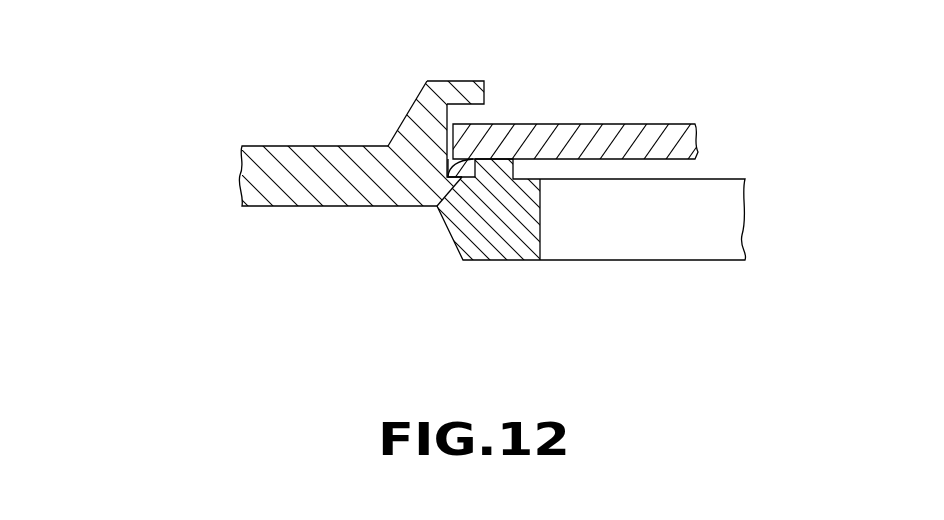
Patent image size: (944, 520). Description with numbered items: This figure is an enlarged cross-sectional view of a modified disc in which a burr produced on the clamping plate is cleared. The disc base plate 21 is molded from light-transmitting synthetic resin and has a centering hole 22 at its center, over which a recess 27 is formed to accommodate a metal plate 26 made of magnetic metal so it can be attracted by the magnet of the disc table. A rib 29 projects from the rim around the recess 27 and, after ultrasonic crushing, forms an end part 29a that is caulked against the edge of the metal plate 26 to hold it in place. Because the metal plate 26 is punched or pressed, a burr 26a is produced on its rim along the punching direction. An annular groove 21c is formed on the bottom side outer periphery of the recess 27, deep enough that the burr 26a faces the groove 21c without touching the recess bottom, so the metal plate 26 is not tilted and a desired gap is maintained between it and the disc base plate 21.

The disc base plate 21 is at (297, 185).
The annular groove 21c is at (462, 178).
The centering hole 22 is at (540, 238).
The metal plate 26 is at (652, 125).
The burr 26a is at (462, 178).
The recess 27 is at (457, 115).
The rib 29 is at (402, 112).
The end part 29a is at (463, 88).